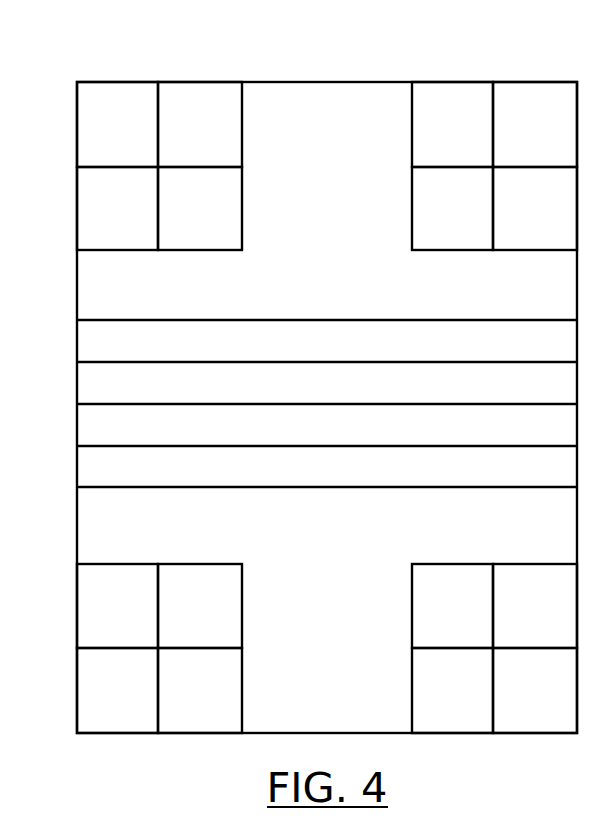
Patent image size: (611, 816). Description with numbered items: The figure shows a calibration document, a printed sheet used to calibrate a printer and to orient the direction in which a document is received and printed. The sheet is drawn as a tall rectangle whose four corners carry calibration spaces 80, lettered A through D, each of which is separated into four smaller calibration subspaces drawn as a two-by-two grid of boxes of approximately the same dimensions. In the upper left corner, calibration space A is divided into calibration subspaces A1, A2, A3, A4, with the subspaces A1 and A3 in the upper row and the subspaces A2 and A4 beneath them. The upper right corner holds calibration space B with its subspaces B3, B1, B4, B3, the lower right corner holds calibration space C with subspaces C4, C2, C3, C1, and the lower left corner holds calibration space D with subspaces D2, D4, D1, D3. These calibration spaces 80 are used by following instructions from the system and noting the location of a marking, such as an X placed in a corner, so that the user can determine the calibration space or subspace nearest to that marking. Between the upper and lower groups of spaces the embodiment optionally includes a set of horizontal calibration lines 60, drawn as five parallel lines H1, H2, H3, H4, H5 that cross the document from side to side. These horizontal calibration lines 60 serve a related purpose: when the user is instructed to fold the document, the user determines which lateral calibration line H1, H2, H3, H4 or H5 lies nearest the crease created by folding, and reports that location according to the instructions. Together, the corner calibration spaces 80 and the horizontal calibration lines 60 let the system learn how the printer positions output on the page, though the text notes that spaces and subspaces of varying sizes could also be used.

The calibration spaces 80 is at (327, 402).
The horizontal calibration lines 60 is at (302, 389).
The horizontal calibration line H1 is at (327, 305).
The horizontal calibration line H2 is at (327, 347).
The horizontal calibration line H3 is at (327, 389).
The horizontal calibration line H4 is at (327, 431).
The horizontal calibration line H5 is at (327, 472).
The calibration subspace A1 is at (117, 124).
The calibration subspace A2 is at (117, 208).
The calibration subspace A3 is at (200, 124).
The calibration subspace A4 is at (200, 208).
The calibration subspace B1 is at (535, 124).
The calibration subspace B3 is at (494, 166).
The calibration subspace B4 is at (452, 208).
The calibration subspace C1 is at (535, 690).
The calibration subspace C2 is at (535, 606).
The calibration subspace C3 is at (452, 690).
The calibration subspace C4 is at (452, 606).
The calibration subspace D1 is at (117, 690).
The calibration subspace D2 is at (117, 606).
The calibration subspace D3 is at (200, 690).
The calibration subspace D4 is at (200, 606).